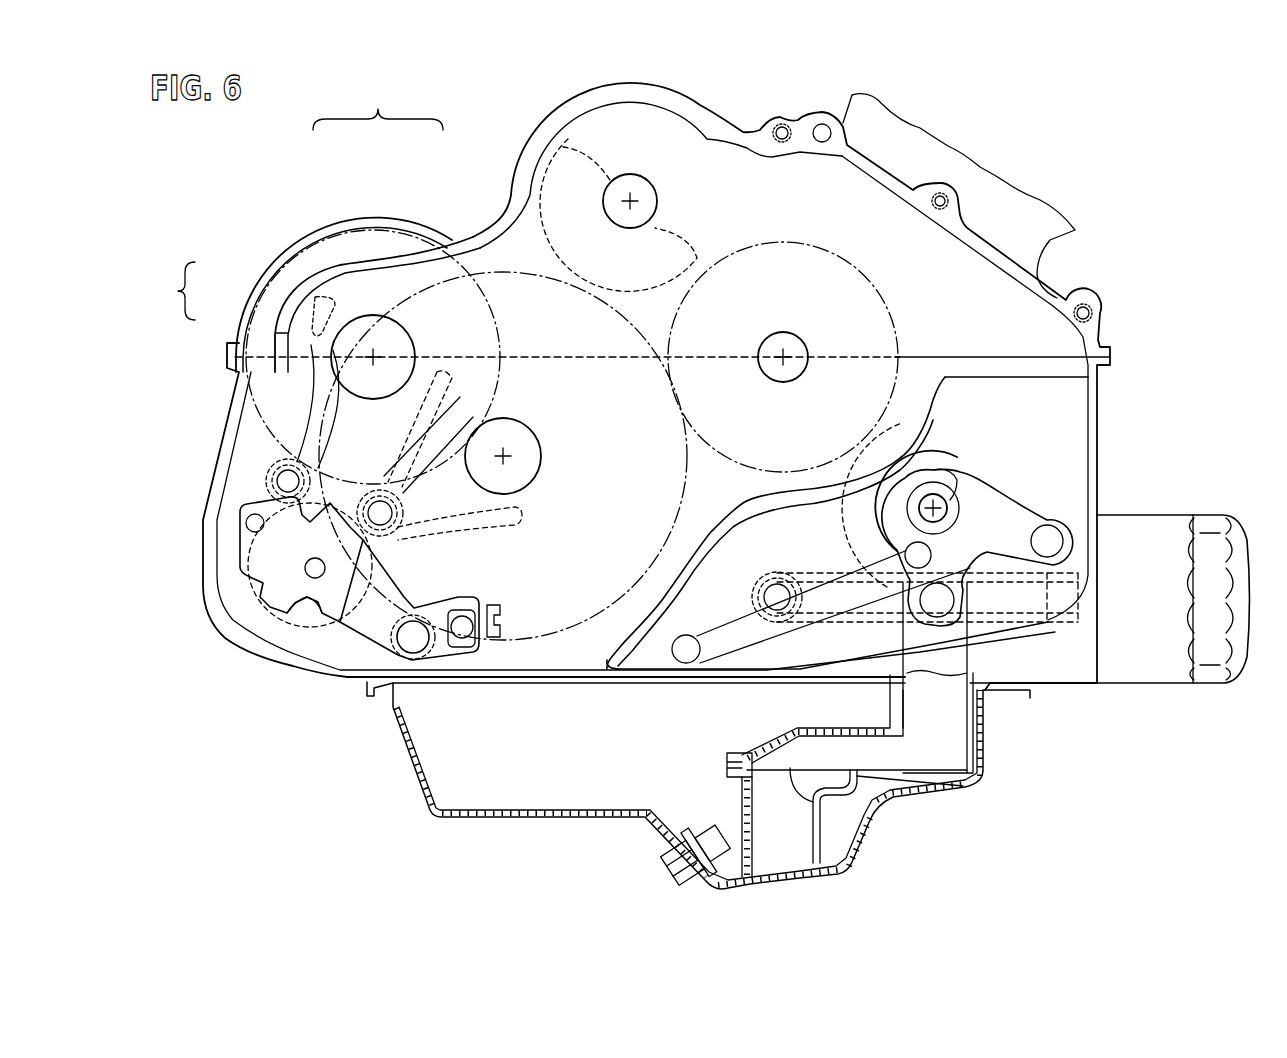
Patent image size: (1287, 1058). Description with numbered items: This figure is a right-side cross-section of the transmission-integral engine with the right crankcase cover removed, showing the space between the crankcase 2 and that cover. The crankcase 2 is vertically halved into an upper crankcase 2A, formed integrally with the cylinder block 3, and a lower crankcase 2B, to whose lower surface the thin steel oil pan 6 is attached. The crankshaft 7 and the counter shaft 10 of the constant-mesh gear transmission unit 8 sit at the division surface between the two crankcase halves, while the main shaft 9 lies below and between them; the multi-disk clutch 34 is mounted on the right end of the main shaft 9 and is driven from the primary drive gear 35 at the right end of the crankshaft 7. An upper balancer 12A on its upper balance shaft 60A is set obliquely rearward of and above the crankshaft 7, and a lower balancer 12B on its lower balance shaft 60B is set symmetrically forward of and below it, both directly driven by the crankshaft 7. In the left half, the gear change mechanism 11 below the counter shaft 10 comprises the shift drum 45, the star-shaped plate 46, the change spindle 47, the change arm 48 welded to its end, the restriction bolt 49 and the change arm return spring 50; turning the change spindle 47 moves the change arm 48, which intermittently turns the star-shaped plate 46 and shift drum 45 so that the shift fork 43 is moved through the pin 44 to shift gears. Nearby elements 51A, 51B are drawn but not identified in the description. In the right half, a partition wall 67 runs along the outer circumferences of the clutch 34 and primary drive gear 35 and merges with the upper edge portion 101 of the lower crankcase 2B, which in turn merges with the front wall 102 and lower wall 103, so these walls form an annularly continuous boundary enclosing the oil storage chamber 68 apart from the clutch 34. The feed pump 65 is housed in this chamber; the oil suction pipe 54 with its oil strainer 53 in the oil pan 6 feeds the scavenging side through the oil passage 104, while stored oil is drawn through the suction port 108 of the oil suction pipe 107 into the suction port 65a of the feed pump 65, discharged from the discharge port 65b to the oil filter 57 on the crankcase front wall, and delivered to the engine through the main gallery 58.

The crankcase 2 is at (176, 291).
The upper crankcase 2A is at (292, 313).
The lower crankcase 2B is at (245, 320).
The cylinder block 3 is at (1050, 232).
The oil pan 6 is at (887, 800).
The crankshaft 7 is at (790, 353).
The gear transmission unit 8 is at (378, 107).
The main shaft 9 is at (503, 455).
The counter shaft 10 is at (370, 355).
The gear change mechanism 11 is at (240, 615).
The upper balancer 12A is at (570, 168).
The lower balancer 12B is at (862, 462).
The multi-disk clutch 34 is at (617, 600).
The primary drive gear 35 is at (822, 460).
The shift fork 43 is at (287, 428).
The pin 44 is at (240, 567).
The shift drum 45 is at (327, 643).
The star-shaped plate 46 is at (320, 634).
The change spindle 47 is at (413, 637).
The change arm 48 is at (368, 626).
The restriction bolt 49 is at (465, 640).
The change arm return spring 50 is at (498, 642).
The spring 51A is at (376, 520).
The spring 51B is at (283, 482).
The oil strainer 53 is at (830, 795).
The oil suction pipe 54 is at (927, 737).
The oil filter 57 is at (1165, 607).
The main gallery 58 is at (775, 600).
The upper balance shaft 60A is at (637, 199).
The lower balance shaft 60B is at (936, 506).
The feed pump 65 is at (1012, 487).
The suction port 65a is at (908, 550).
The discharge port 65b is at (1050, 548).
The partition wall 67 is at (731, 512).
The oil storage chamber 68 is at (899, 481).
The upper edge portion 101 is at (1030, 367).
The front wall 102 is at (1094, 497).
The lower wall 103 is at (803, 670).
The oil passage 104 is at (937, 606).
The oil suction pipe 107 is at (718, 650).
The suction port 108 is at (678, 652).